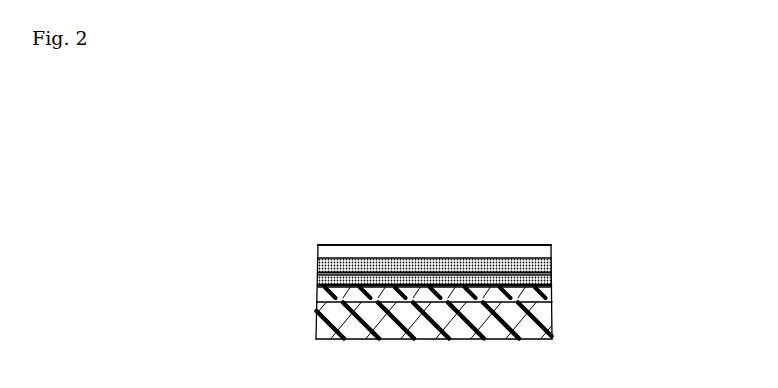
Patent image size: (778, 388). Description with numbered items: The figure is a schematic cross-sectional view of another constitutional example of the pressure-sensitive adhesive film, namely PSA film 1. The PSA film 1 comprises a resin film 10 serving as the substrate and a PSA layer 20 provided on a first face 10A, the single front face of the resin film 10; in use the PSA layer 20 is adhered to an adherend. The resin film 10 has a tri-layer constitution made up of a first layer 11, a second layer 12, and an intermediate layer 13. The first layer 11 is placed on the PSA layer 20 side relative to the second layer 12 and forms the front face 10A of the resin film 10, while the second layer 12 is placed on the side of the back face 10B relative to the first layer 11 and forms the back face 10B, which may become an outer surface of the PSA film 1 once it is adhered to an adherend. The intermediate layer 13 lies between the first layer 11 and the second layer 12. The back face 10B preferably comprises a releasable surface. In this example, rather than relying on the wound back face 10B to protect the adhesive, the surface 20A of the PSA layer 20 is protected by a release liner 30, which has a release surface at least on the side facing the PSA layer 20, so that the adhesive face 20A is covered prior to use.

The PSA film 1 is at (450, 252).
The resin film 10 is at (450, 258).
The first face 10A is at (317, 287).
The back face 10B is at (353, 245).
The first layer 11 is at (549, 279).
The second layer 12 is at (548, 253).
The intermediate layer 13 is at (548, 268).
The PSA layer 20 is at (440, 317).
The surface 20A is at (316, 305).
The release liner 30 is at (523, 333).